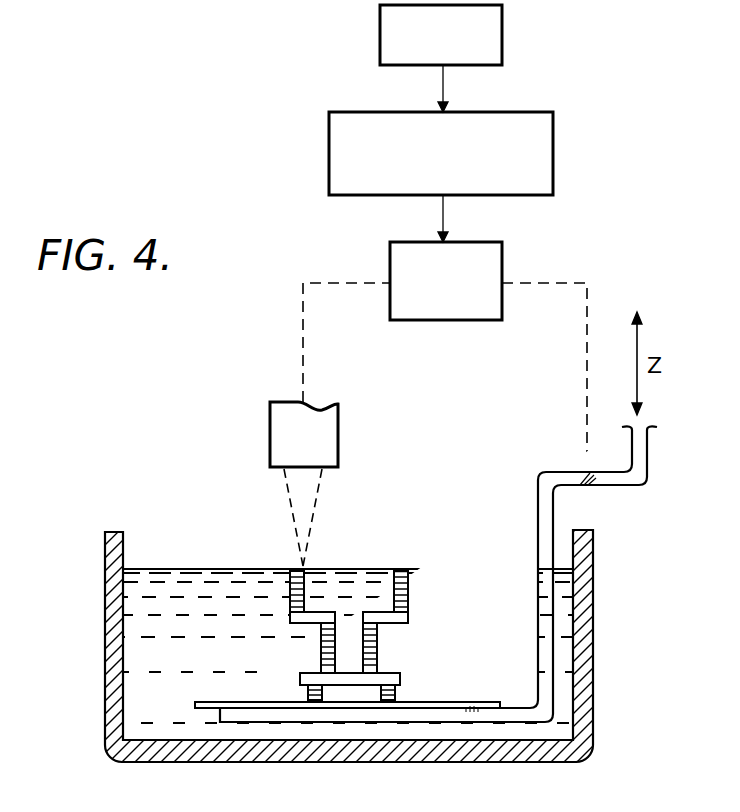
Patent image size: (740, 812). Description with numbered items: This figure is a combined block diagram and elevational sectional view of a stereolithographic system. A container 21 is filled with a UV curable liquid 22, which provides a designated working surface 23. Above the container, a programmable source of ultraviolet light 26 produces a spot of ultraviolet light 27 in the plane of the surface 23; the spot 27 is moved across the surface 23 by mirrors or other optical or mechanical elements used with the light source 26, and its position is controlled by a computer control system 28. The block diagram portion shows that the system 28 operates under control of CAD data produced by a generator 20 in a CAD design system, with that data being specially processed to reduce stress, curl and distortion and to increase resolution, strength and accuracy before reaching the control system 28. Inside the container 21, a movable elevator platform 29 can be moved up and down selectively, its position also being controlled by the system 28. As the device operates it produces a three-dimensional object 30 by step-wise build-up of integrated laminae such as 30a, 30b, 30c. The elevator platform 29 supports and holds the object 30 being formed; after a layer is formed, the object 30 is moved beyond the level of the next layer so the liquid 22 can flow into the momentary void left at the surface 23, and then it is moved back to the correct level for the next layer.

The generator 20 is at (502, 33).
The container 21 is at (553, 152).
The computer control system 28 is at (502, 262).
The source of ultraviolet light 26 is at (338, 427).
The spot of ultraviolet light 27 is at (305, 568).
The working surface 23 is at (200, 568).
The UV curable liquid 22 is at (201, 669).
The three-dimensional object 30 is at (377, 615).
The lamina 30a is at (413, 603).
The lamina 30b is at (412, 571).
The lamina 30c is at (393, 617).
The elevator platform 29 is at (522, 722).